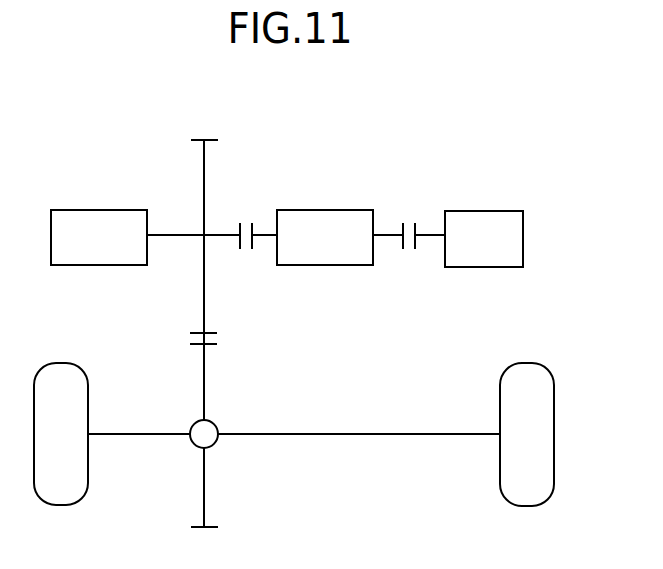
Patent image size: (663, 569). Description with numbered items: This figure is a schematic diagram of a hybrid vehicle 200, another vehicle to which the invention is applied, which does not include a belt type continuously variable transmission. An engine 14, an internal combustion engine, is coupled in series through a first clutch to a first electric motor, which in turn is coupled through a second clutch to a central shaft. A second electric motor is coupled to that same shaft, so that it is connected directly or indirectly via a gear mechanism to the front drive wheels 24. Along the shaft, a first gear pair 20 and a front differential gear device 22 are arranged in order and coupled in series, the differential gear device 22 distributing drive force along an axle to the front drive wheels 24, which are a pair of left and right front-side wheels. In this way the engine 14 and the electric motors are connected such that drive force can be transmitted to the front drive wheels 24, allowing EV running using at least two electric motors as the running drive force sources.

The hybrid vehicle 200 is at (121, 127).
The engine 14 is at (477, 258).
The first gear pair 20 is at (224, 339).
The front differential gear device 22 is at (198, 429).
The front drive wheels 24 is at (66, 492).